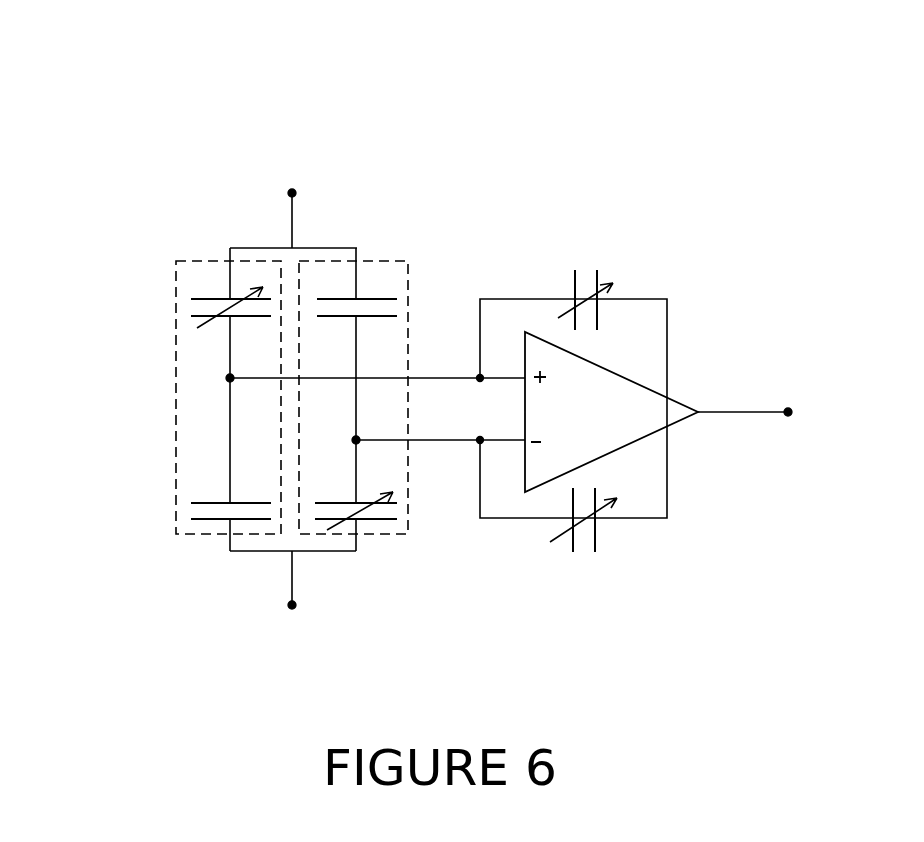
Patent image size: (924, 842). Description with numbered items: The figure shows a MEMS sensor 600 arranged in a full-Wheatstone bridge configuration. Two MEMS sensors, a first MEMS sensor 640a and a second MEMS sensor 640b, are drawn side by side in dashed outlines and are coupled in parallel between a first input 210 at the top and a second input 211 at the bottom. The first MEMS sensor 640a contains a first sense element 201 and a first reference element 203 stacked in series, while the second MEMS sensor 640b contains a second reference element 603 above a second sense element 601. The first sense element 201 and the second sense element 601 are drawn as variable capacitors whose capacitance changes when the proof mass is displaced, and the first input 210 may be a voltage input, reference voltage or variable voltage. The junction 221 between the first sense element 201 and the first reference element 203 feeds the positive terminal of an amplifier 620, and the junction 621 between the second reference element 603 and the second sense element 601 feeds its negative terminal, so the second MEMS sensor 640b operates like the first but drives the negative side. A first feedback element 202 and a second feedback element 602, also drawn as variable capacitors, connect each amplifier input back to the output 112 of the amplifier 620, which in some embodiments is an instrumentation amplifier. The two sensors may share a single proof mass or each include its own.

The MEMS sensor 600 is at (153, 128).
The first input 210 is at (292, 193).
The second input 211 is at (292, 605).
The first MEMS sensor 640a is at (175, 262).
The second MEMS sensor 640b is at (378, 262).
The first sense element 201 is at (190, 300).
The second reference element 603 is at (397, 300).
The first reference element 203 is at (190, 503).
The second sense element 601 is at (393, 520).
The first bridge node 221 is at (230, 378).
The second bridge node 621 is at (356, 440).
The first feedback element 202 is at (600, 272).
The second feedback element 602 is at (597, 540).
The amplifier 620 is at (683, 424).
The output 112 is at (790, 414).